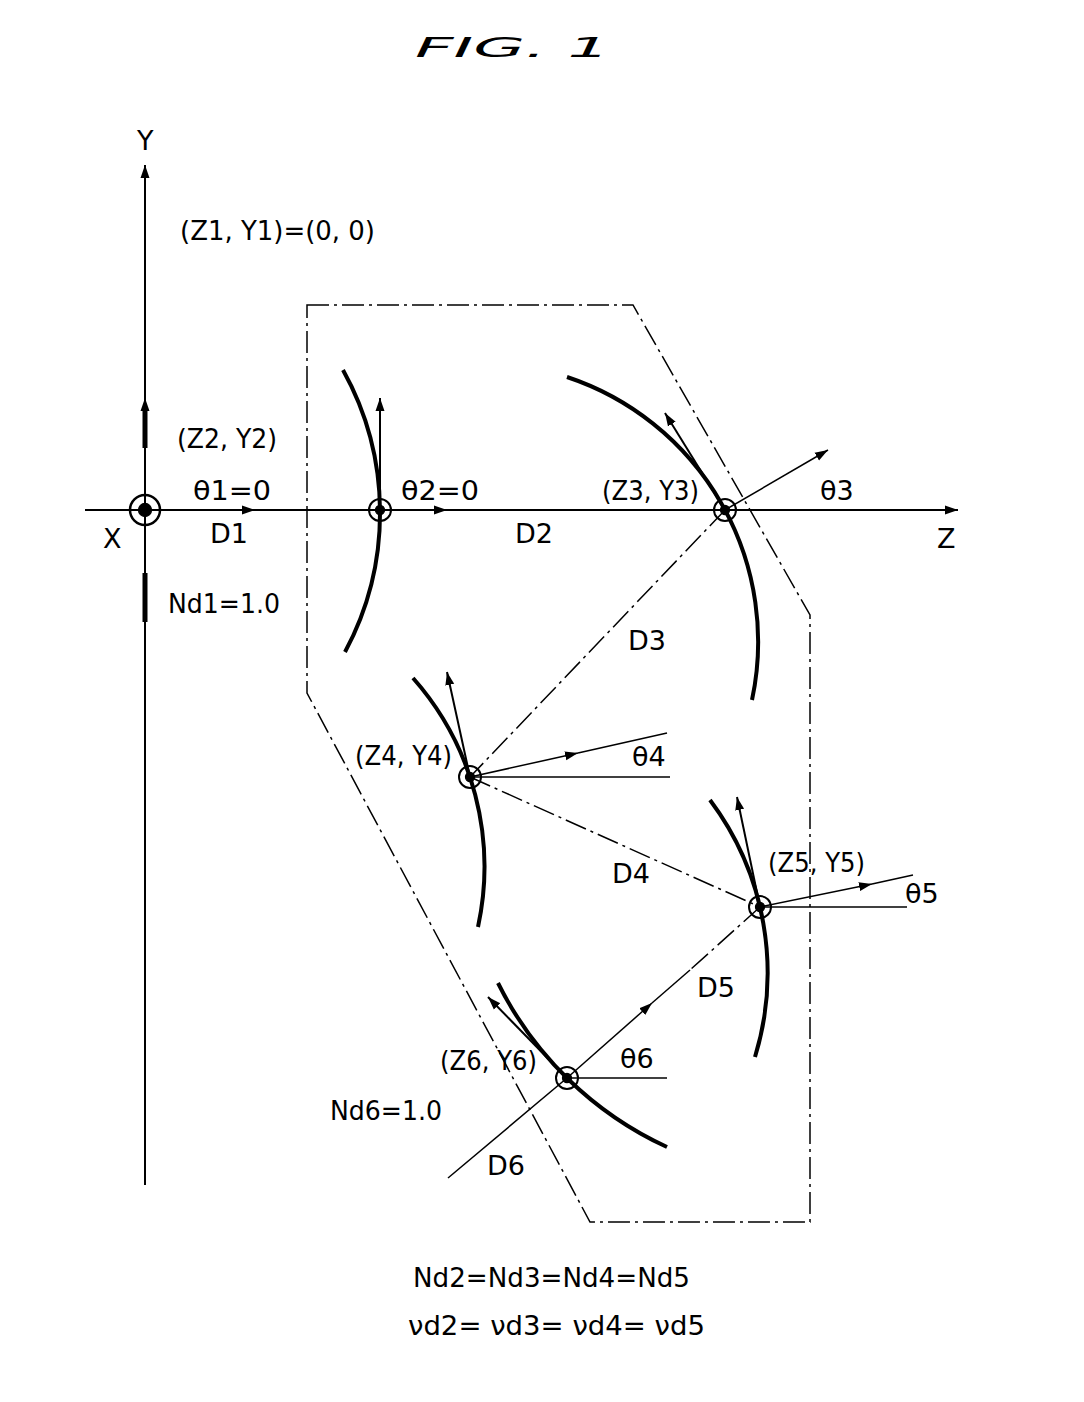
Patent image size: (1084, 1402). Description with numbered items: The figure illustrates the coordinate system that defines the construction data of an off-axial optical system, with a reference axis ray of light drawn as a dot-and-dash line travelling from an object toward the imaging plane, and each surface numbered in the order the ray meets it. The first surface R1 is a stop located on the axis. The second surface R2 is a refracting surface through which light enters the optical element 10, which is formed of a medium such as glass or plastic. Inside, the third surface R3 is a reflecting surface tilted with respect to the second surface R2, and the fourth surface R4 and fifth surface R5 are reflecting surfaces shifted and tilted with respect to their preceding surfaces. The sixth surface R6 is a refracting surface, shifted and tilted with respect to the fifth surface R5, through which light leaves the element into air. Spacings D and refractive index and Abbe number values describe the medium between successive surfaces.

The optical element 10 is at (513, 306).
The first surface R1 is at (147, 413).
The second surface R2 is at (353, 387).
The third surface R3 is at (577, 383).
The fourth surface R4 is at (485, 893).
The fifth surface R5 is at (770, 1025).
The sixth surface R6 is at (640, 1130).